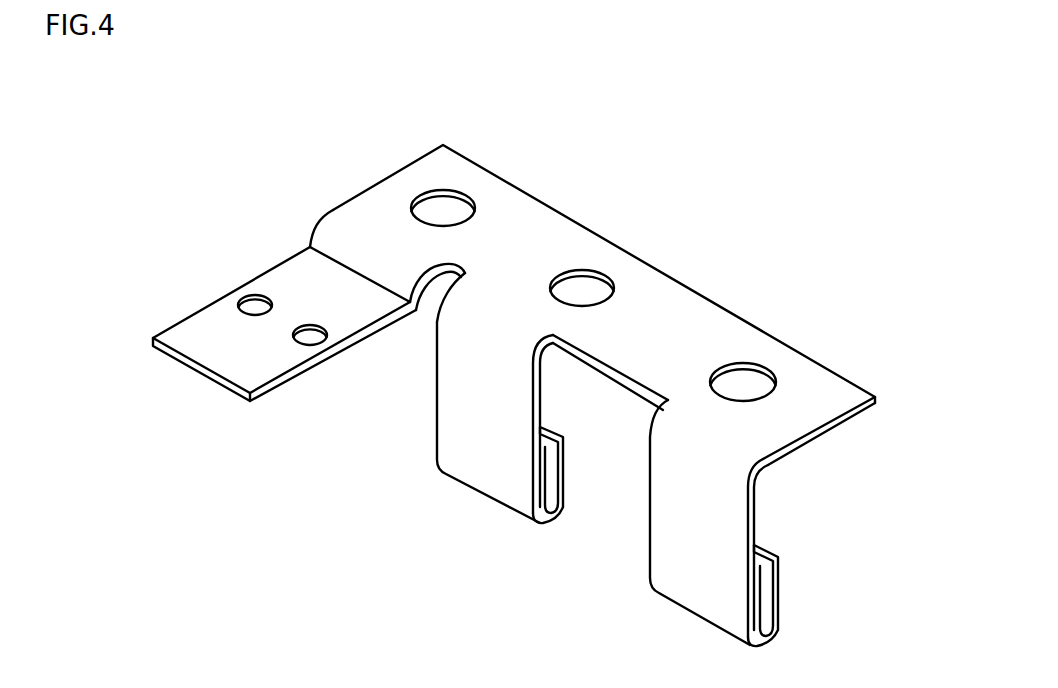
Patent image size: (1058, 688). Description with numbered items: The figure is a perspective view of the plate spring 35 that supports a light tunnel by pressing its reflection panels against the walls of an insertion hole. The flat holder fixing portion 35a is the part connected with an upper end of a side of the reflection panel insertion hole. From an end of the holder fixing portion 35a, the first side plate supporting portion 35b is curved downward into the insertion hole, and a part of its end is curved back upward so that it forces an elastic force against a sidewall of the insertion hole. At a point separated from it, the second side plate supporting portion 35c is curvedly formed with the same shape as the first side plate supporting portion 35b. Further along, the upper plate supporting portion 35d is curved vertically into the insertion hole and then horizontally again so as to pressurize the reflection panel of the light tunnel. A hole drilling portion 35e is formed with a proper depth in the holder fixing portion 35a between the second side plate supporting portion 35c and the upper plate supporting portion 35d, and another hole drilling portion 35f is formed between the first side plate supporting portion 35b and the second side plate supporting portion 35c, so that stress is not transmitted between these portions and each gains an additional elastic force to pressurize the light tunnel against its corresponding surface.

The plate spring 35 is at (845, 225).
The holder fixing portion 35a is at (680, 302).
The first side plate supporting portion 35b is at (700, 564).
The second side plate supporting portion 35c is at (475, 397).
The upper plate supporting portion 35d is at (222, 348).
The hole drilling portion 35e is at (445, 277).
The hole drilling portion 35f is at (608, 390).